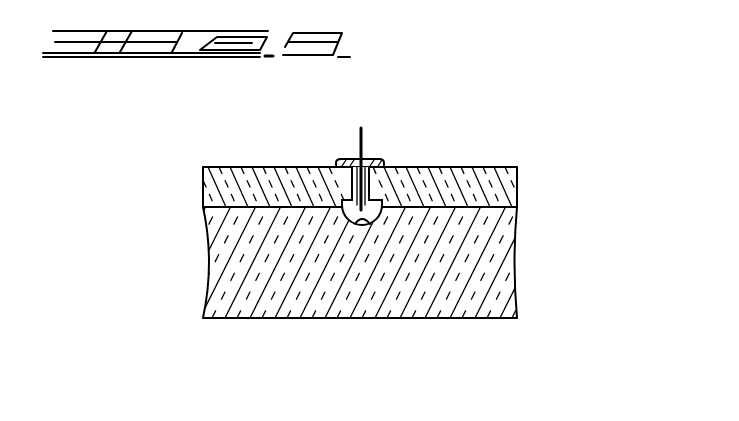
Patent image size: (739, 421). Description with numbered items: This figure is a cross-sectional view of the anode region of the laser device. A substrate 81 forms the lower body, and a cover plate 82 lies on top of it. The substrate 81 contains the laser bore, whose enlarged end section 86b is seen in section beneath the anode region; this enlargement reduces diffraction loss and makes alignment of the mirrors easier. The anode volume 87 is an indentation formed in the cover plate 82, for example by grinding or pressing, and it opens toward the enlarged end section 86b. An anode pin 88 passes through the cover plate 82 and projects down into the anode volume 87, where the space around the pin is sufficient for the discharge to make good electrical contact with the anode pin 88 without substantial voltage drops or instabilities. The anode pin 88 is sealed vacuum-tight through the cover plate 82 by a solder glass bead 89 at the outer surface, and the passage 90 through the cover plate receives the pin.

The substrate 81 is at (492, 281).
The cover plate 82 is at (502, 189).
The enlarged end section of laser bore 86b is at (369, 226).
The anode volume 87 is at (348, 203).
The anode pin 88 is at (360, 134).
The solder glass bead 89 is at (377, 160).
The bore 90 is at (357, 186).